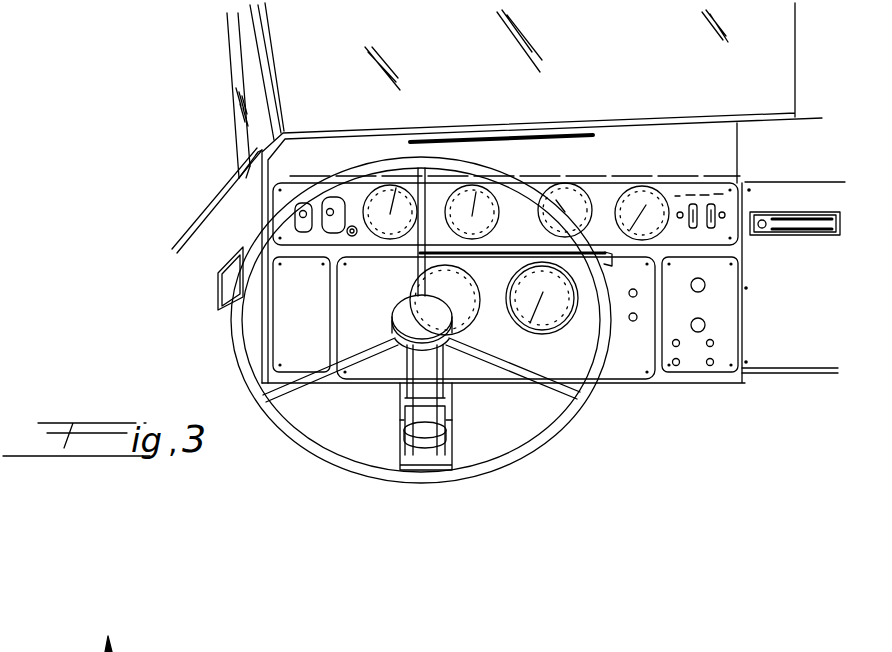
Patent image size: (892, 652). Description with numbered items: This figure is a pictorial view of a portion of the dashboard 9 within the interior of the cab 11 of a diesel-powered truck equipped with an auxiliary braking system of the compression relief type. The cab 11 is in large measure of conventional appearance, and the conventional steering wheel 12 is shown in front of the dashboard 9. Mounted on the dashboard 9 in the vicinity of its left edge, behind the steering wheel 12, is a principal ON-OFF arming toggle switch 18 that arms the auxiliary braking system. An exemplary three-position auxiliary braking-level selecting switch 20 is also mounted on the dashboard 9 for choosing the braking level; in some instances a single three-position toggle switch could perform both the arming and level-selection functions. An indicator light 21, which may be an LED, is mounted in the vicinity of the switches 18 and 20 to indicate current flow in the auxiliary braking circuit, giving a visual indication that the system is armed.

The dashboard 9 is at (606, 190).
The cab 11 is at (185, 361).
The steering wheel 12 is at (240, 323).
The arming toggle switch 18 is at (297, 225).
The three-position auxiliary braking-level selecting switch 20 is at (313, 231).
The indicator light 21 is at (347, 233).